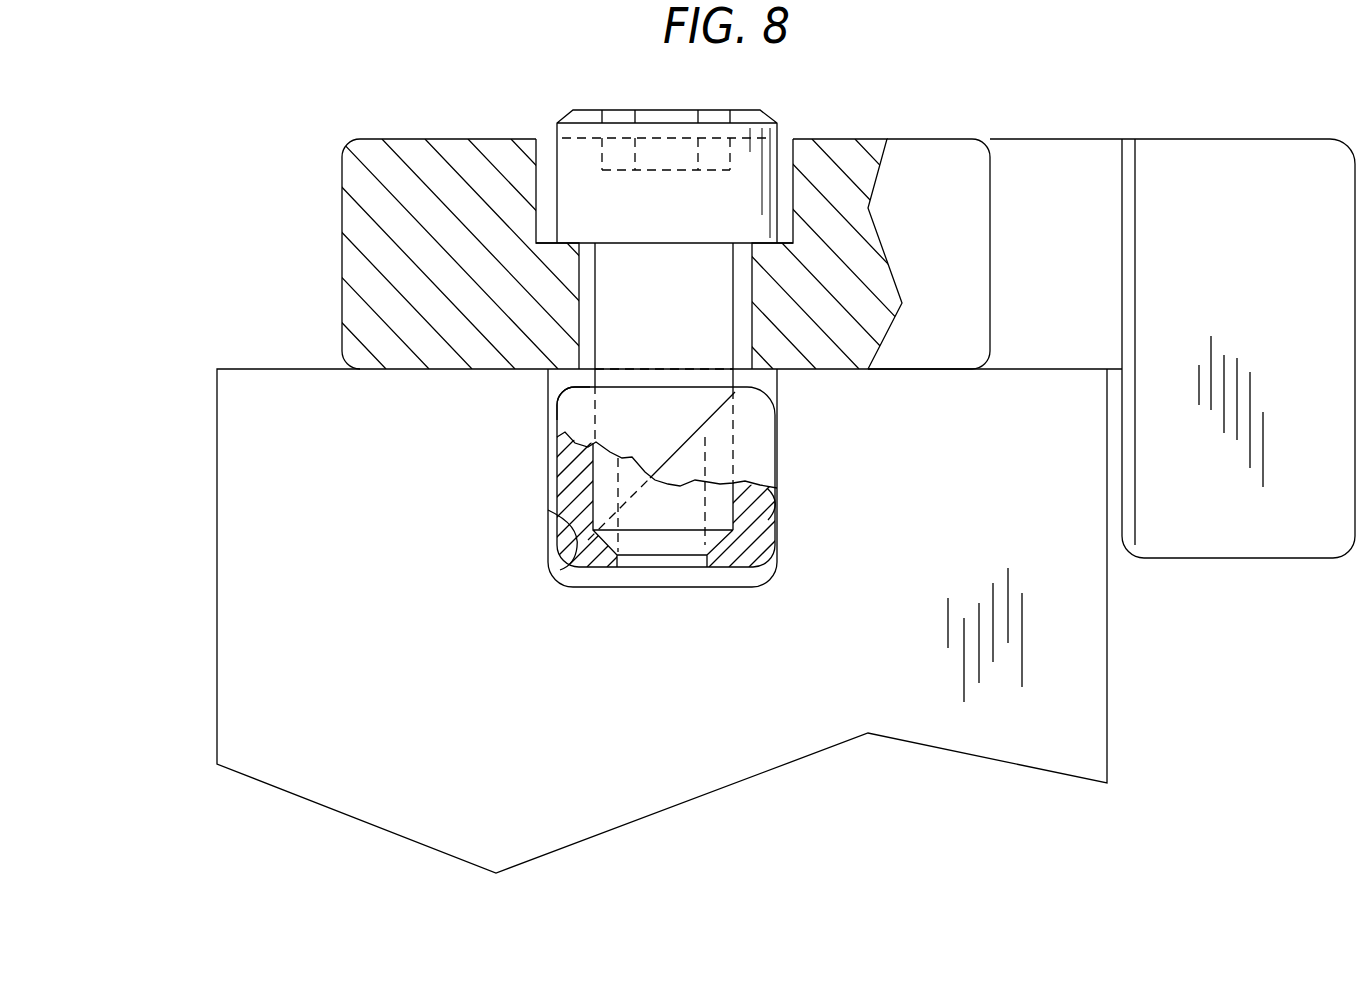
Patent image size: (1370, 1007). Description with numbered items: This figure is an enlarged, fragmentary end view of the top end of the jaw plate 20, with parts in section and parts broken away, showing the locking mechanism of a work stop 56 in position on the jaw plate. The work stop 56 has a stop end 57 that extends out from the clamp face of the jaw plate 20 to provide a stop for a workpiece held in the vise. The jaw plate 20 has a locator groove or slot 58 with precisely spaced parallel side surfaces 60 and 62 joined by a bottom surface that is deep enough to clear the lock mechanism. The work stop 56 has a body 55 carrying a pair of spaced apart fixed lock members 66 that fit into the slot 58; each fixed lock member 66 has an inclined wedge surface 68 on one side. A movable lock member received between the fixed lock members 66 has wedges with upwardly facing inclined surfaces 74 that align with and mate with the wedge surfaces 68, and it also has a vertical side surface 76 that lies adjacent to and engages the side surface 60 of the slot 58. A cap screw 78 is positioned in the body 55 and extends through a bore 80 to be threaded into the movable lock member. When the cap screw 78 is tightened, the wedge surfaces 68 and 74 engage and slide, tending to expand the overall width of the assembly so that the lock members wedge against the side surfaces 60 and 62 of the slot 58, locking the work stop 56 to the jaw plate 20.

The jaw plate 20 is at (268, 484).
The work stop body 55 is at (468, 165).
The work stop 56 is at (1050, 168).
The stop end 57 is at (1293, 527).
The locator groove or slot 58 is at (728, 578).
The side surface of slot 60 is at (773, 512).
The side surface of slot 62 is at (573, 560).
The fixed lock member 66 is at (557, 467).
The inclined wedge surface 68 is at (708, 408).
The inclined surface 74 is at (693, 445).
The vertical side surface 76 is at (556, 410).
The cap screw 78 is at (728, 208).
The bore 80 is at (740, 292).